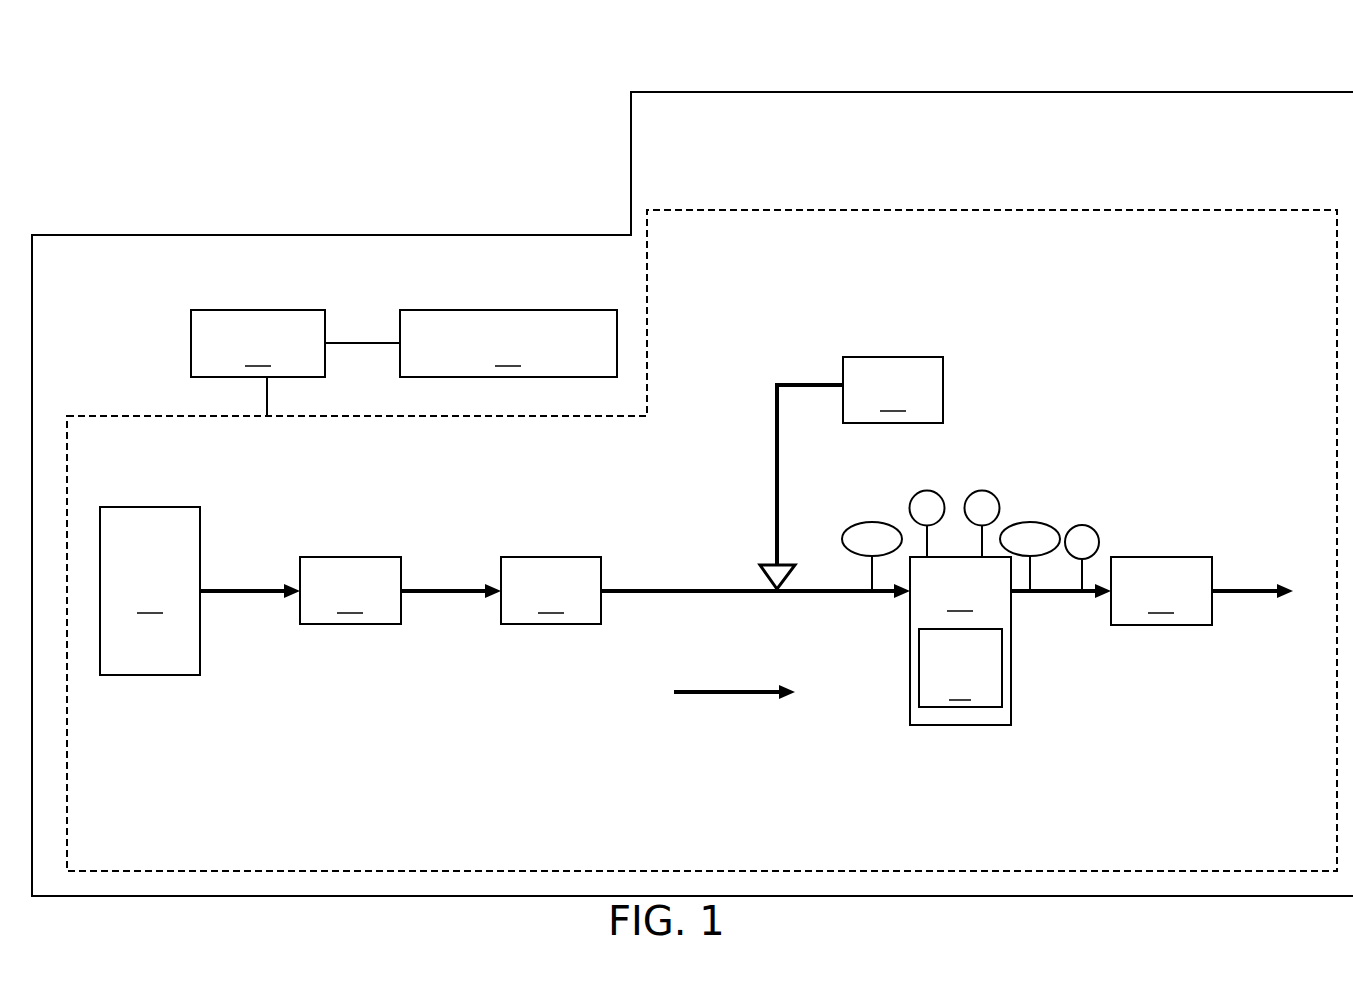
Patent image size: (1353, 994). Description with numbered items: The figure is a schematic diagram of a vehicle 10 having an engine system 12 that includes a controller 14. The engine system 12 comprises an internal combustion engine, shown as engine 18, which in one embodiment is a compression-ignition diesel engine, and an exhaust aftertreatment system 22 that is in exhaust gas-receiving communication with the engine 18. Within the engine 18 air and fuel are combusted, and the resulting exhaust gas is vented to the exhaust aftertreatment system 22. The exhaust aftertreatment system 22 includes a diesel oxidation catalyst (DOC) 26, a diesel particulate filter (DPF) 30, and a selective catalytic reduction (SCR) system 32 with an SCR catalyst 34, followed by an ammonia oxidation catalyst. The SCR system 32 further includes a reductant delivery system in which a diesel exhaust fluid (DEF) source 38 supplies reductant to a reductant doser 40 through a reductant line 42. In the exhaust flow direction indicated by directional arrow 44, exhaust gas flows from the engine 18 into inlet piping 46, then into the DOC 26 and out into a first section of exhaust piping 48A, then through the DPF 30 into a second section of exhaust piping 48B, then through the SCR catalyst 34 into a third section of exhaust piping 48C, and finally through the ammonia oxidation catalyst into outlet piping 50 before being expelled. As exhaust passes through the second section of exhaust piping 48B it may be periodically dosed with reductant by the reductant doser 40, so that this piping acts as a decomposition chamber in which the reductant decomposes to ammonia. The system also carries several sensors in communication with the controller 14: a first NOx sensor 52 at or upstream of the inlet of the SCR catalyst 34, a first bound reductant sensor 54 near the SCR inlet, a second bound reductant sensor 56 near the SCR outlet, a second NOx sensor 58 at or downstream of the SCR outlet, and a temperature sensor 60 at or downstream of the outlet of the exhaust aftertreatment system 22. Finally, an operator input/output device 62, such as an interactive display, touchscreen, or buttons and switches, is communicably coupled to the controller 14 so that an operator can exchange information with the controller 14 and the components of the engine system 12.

The vehicle 10 is at (910, 36).
The engine system 12 is at (926, 152).
The controller 14 is at (295, 363).
The engine 18 is at (150, 591).
The exhaust aftertreatment system 22 is at (903, 316).
The diesel oxidation catalyst (DOC) 26 is at (350, 590).
The diesel particulate filter (DPF) 30 is at (551, 590).
The selective catalytic reduction (SCR) system 32 is at (960, 641).
The SCR catalyst 34 is at (960, 668).
The diesel exhaust fluid (DEF) source 38 is at (893, 390).
The reductant doser 40 is at (768, 558).
The reductant line 42 is at (777, 440).
The directional arrow 44 is at (727, 693).
The inlet piping 46 is at (249, 592).
The first section of exhaust piping 48A is at (423, 592).
The second section of exhaust piping 48B is at (817, 592).
The third section of exhaust piping 48C is at (1033, 592).
The outlet piping 50 is at (1252, 592).
The first NOx sensor 52 is at (858, 522).
The first bound reductant sensor 54 is at (927, 490).
The second bound reductant sensor 56 is at (982, 490).
The second NOx sensor 58 is at (1020, 522).
The temperature sensor 60 is at (1082, 525).
The operator input/output (I/O) device 62 is at (508, 343).